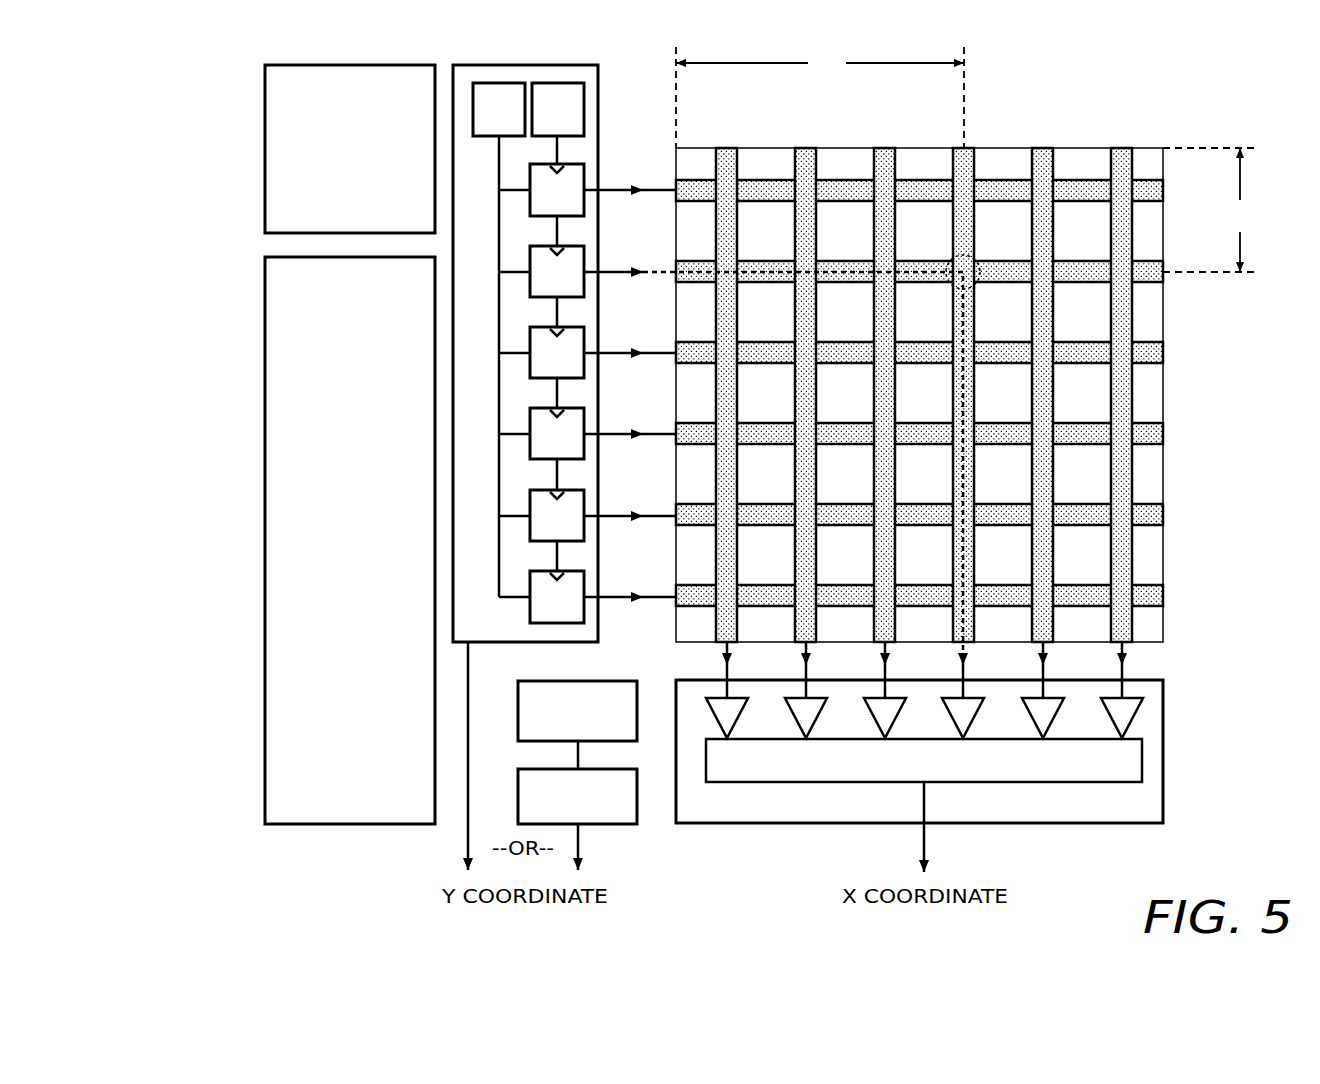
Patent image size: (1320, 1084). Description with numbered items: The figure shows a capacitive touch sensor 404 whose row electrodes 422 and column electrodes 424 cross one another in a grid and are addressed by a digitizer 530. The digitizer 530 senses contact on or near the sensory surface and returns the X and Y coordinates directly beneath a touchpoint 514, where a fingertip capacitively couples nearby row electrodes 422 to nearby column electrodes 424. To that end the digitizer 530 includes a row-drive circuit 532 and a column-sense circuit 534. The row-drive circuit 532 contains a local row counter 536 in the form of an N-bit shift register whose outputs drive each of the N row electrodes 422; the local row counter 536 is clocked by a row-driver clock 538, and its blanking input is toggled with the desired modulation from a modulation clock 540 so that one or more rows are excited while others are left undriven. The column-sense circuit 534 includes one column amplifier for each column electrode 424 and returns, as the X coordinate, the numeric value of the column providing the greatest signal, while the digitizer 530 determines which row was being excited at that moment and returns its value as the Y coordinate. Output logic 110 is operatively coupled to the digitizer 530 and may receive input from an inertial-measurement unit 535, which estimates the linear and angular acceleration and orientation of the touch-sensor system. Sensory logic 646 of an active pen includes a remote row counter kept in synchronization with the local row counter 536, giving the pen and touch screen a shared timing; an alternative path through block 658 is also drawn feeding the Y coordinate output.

The digitizer 530 is at (182, 855).
The inertial-measurement unit (IMU) 535 is at (331, 173).
The output logic 110 is at (331, 580).
The row-drive circuit 532 is at (505, 628).
The modulation clock 540 is at (480, 121).
The row-driver clock 538 is at (539, 121).
The local row counter 536 is at (530, 387).
The capacitive touch sensor 404 is at (950, 356).
The column electrode 424 is at (956, 146).
The row electrode 422 is at (1168, 279).
The touchpoint 514 is at (984, 268).
The column-sense circuit 534 is at (1106, 815).
The sensory logic 646 is at (559, 720).
The processing block 658 is at (559, 806).